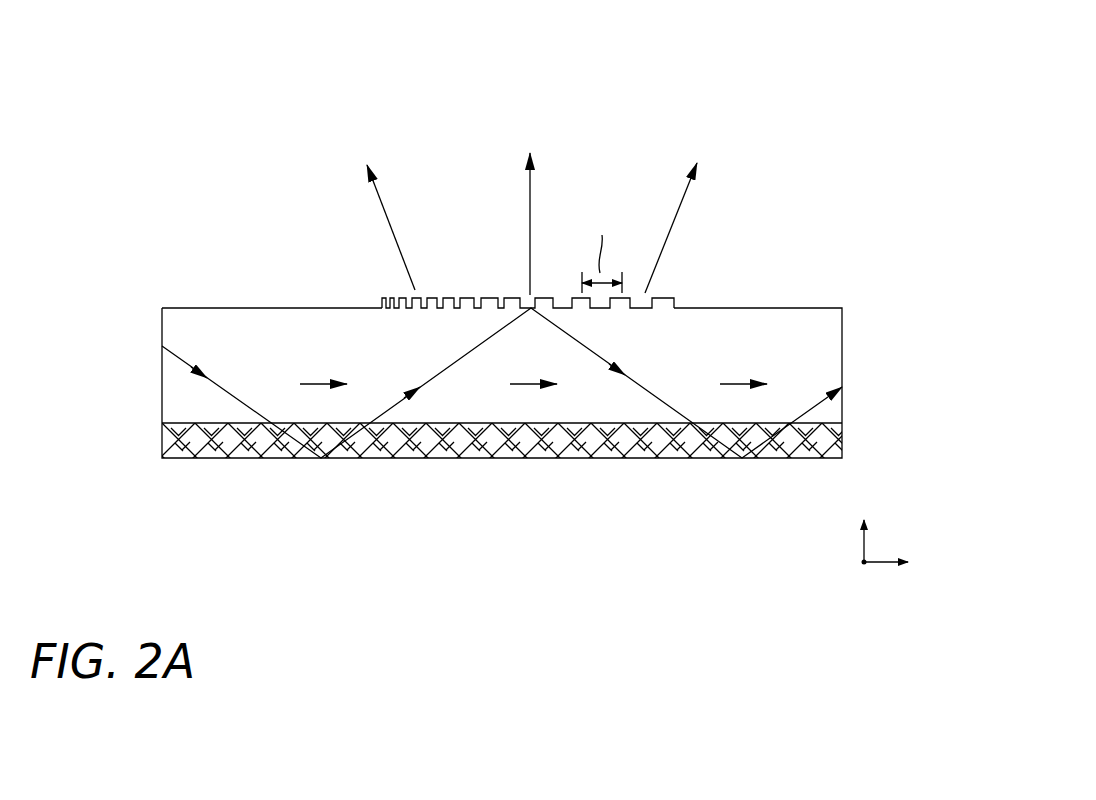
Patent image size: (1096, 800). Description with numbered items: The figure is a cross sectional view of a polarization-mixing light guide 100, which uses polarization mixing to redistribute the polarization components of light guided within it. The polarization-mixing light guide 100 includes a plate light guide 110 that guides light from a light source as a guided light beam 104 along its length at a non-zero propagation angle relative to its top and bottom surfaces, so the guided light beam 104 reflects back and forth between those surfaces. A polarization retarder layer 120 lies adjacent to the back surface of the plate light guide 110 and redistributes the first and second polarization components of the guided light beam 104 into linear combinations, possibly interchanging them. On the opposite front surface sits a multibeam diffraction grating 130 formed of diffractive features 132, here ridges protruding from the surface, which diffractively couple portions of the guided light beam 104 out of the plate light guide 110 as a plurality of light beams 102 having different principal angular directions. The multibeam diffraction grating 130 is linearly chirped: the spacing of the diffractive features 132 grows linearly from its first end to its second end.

The polarization-mixing light guide 100 is at (783, 67).
The light beams 102 is at (722, 193).
The guided light beam 104 is at (643, 402).
The plate light guide 110 is at (150, 310).
The polarization retarder layer 120 is at (842, 438).
The multibeam diffraction grating 130 is at (376, 291).
The diffractive features 132 is at (485, 295).